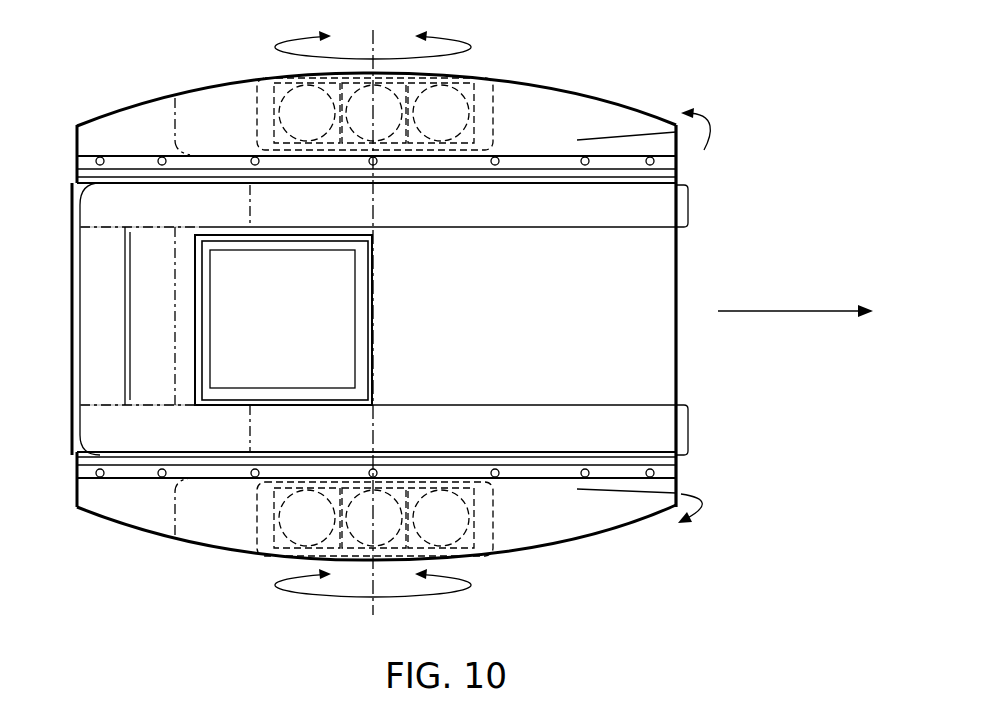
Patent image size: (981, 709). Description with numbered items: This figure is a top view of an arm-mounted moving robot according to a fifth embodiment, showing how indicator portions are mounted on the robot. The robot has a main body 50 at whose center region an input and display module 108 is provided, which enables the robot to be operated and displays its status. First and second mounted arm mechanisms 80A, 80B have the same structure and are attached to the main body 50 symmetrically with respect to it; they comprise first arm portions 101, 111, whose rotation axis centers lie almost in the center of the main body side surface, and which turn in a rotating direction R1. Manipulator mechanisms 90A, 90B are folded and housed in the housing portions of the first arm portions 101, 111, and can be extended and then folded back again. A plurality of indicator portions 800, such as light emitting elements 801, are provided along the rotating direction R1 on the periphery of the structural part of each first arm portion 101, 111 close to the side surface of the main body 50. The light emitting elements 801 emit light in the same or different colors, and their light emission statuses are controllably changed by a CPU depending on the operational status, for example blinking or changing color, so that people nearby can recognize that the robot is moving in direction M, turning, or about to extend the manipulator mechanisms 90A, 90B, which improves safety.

The main body 50 is at (668, 263).
The input and display module 108 is at (343, 303).
The indicator portion 800 is at (77, 162).
The light emitting element 801 is at (161, 479).
The second mounted arm mechanism 80B is at (376, 86).
The first mounted arm mechanism 80A is at (376, 556).
The manipulator mechanism 90B is at (468, 72).
The manipulator mechanism 90A is at (262, 558).
The first arm portion 111 is at (577, 102).
The first arm portion 101 is at (563, 533).
The rotating direction R1 is at (497, 314).
The movement direction M is at (780, 311).